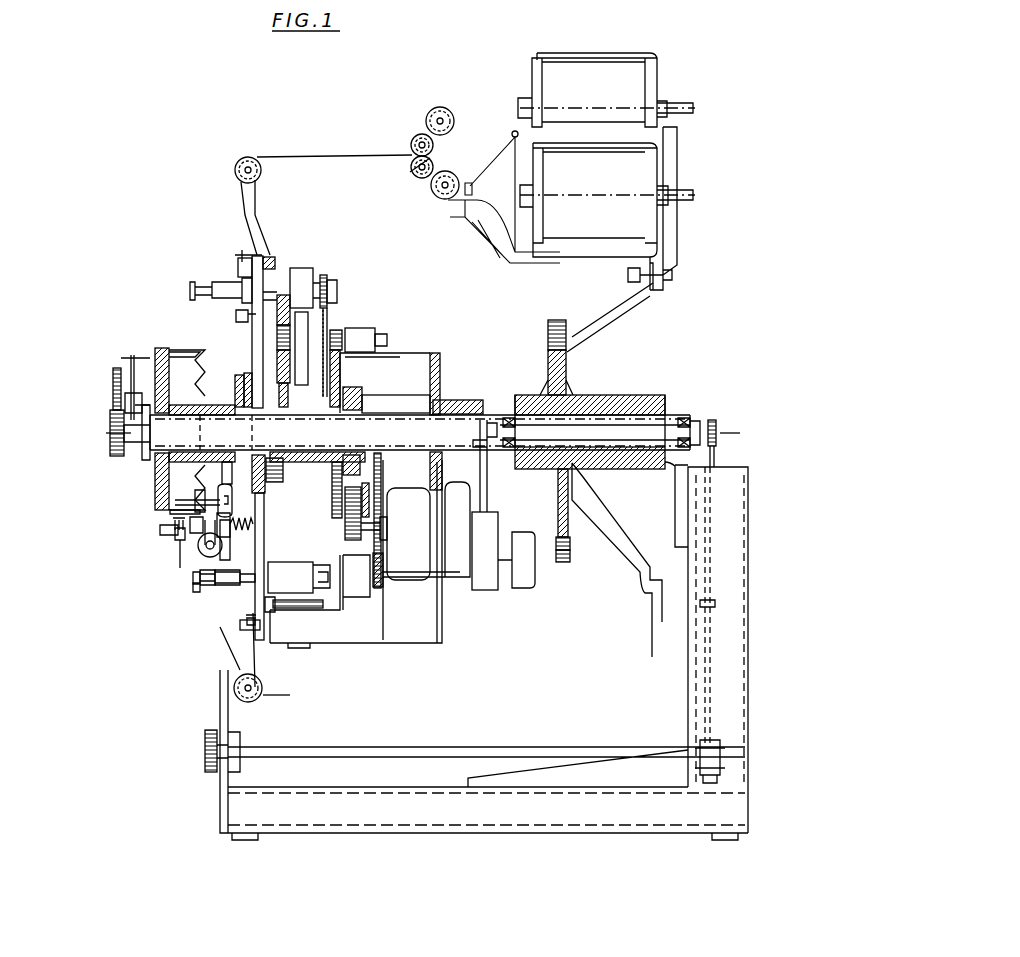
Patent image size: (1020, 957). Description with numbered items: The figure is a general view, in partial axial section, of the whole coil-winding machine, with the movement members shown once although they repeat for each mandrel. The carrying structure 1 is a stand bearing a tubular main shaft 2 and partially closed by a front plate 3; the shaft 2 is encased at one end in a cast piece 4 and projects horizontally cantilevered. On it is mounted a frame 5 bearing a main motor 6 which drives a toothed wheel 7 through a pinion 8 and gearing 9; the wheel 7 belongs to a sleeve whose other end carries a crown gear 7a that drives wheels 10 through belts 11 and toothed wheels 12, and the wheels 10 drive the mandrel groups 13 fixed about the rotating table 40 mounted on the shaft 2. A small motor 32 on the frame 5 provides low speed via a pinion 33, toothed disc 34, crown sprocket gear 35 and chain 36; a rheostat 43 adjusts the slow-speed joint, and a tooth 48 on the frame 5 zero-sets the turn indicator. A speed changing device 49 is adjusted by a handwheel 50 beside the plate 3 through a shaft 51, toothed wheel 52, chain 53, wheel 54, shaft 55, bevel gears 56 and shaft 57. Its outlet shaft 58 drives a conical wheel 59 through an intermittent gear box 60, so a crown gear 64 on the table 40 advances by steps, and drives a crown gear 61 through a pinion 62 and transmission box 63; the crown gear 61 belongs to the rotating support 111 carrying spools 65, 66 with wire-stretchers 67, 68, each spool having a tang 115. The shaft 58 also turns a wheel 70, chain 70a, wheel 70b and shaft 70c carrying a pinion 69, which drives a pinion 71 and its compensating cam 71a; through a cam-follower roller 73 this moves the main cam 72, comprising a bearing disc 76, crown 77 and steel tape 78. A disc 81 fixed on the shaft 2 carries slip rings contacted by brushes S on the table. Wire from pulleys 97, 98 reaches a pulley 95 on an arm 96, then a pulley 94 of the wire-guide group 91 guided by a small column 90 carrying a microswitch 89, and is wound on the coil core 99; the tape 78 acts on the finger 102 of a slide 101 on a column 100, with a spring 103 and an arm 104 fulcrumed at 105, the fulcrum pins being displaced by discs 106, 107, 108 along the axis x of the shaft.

The carrying structure 1 is at (722, 672).
The main shaft 2 is at (683, 413).
The front plate 3 is at (222, 805).
The cast piece 4 is at (660, 410).
The frame 5 is at (538, 450).
The main motor 6 is at (457, 557).
The toothed wheel 7 is at (362, 401).
The crown gear 7a is at (287, 465).
The pinion 8 is at (360, 567).
The gearing 9 is at (398, 460).
The wheels 10 is at (289, 318).
The belt 11 is at (330, 292).
The toothed wheel 12 is at (295, 366).
The mandrel group 13 is at (275, 290).
The small motor 32 is at (387, 339).
The pinion 33 is at (368, 330).
The toothed disc 34 is at (352, 537).
The crown sprocket gear 35 is at (325, 468).
The chain 36 is at (340, 377).
The rotating table 40 is at (258, 558).
The rheostat 43 is at (236, 313).
The tooth 48 is at (293, 608).
The speed changing device 49 is at (482, 582).
The handwheel 50 is at (205, 750).
The shaft 51 is at (430, 752).
The toothed wheel 52 is at (708, 777).
The chain 53 is at (709, 538).
The wheel 54 is at (716, 428).
The shaft 55 is at (546, 428).
The bevel gears 56 is at (498, 420).
The shaft 57 is at (570, 545).
The outlet shaft 58 is at (500, 577).
The conical wheel 59 is at (305, 608).
The gear box 60 is at (337, 627).
The crown gear 61 is at (567, 518).
The pinion 62 is at (570, 558).
The transmission box 63 is at (527, 565).
The crown gear 64 is at (258, 628).
The spool 65 is at (598, 197).
The spool 66 is at (566, 105).
The wire-stretcher 67 is at (450, 175).
The wire-stretcher 68 is at (450, 110).
The pinion 69 is at (118, 445).
The wheel 70 is at (352, 540).
The chain 70a is at (443, 406).
The wheel 70b is at (433, 383).
The shaft 70c is at (394, 462).
The pinion 71 is at (113, 385).
The compensating cam 71a is at (131, 358).
The main cam 72 is at (195, 498).
The cam-follower roller 73 is at (125, 407).
The bearing disc 76 is at (192, 507).
The crown 77 is at (160, 530).
The steel tape 78 is at (165, 368).
The disc 81 is at (268, 482).
The microswitch 89 is at (176, 538).
The small column 90 is at (193, 578).
The wire-guide group 91 is at (200, 540).
The pulley 94 is at (200, 583).
The pulley 95 is at (233, 693).
The arm 96 is at (245, 655).
The pulley 97 is at (412, 168).
The pulley 98 is at (425, 135).
The coil core 99 is at (214, 586).
The small column 100 is at (173, 523).
The slide 101 is at (210, 493).
The finger 102 is at (168, 565).
The spring 103 is at (238, 608).
The arm 104 is at (228, 462).
The fulcrum 105 is at (190, 462).
The disc 106 is at (250, 390).
The fixed disc 107 is at (237, 384).
The fixed disc 108 is at (183, 367).
The rotating support 111 is at (600, 326).
The tang 115 is at (676, 196).
The brushes s is at (255, 520).
The axis x is at (737, 431).